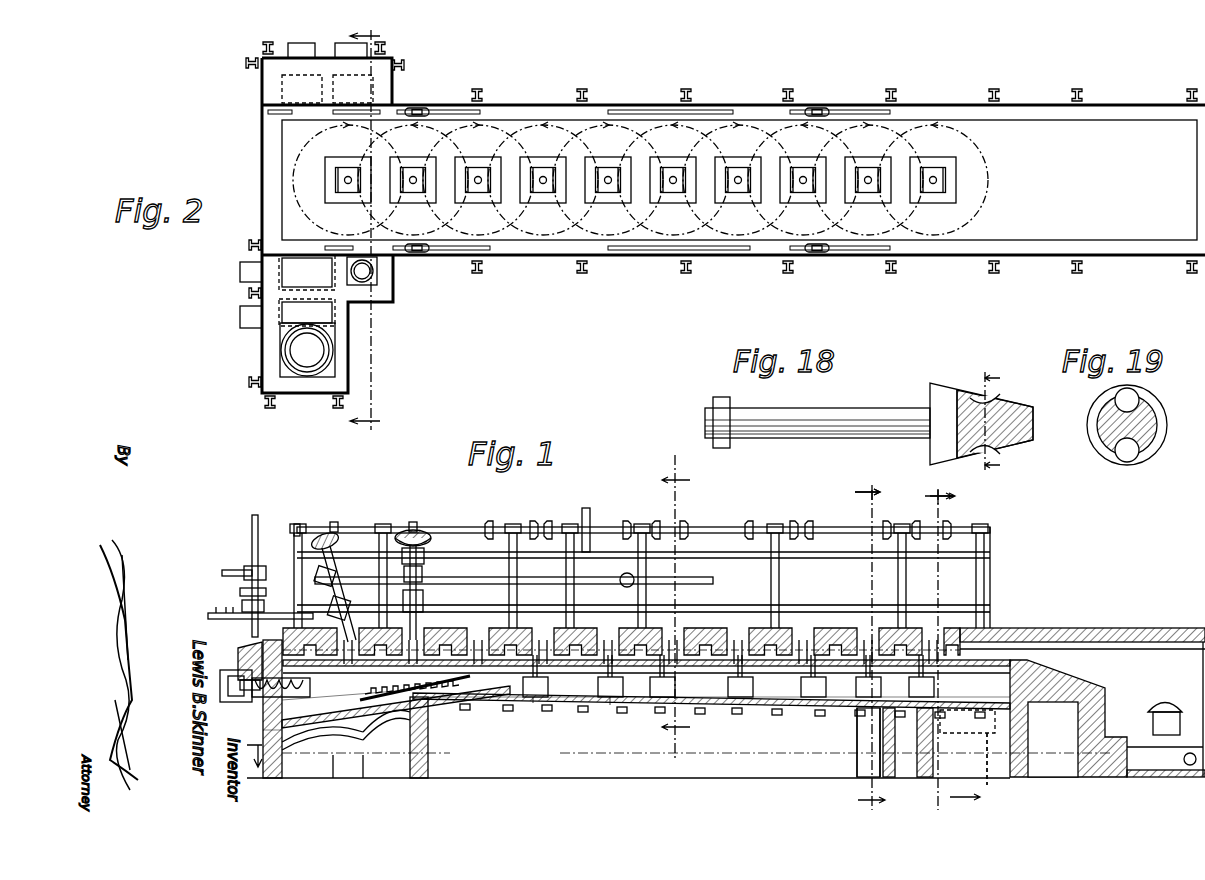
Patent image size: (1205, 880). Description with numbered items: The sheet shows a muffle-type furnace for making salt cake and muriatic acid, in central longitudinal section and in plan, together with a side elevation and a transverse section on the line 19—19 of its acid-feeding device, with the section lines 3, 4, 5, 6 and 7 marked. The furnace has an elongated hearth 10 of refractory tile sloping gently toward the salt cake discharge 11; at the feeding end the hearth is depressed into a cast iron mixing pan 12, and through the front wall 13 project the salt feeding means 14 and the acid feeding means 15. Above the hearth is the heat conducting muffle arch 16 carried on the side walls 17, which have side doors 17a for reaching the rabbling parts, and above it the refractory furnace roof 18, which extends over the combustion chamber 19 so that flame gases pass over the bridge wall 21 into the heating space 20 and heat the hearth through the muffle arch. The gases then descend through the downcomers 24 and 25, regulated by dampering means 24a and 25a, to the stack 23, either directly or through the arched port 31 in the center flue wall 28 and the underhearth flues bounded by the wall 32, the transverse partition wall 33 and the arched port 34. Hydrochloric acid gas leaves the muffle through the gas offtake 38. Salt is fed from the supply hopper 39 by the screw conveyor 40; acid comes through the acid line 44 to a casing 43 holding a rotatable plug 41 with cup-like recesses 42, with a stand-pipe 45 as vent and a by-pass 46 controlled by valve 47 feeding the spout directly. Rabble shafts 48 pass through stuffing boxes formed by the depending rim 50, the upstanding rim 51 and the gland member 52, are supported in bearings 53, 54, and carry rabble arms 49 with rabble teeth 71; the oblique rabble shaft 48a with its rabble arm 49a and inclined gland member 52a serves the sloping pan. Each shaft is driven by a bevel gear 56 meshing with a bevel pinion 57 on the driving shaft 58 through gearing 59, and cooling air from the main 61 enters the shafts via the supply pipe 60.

In FIG. 1, the section line 3 is at (252, 752).
In FIG. 2, the section line 4 is at (371, 240).
In FIG. 18, the section line 5 is at (867, 483).
In FIG. 1, the section line 5 is at (870, 647).
In FIG. 18, the section line 6 is at (942, 489).
In FIG. 1, the section line 6 is at (952, 649).
In FIG. 1, the section line 7 is at (676, 601).
In FIG. 1, the hearth 10 is at (474, 705).
In FIG. 1, the salt cake discharge 11 is at (990, 788).
In FIG. 1, the mixing pan 12 is at (298, 715).
In FIG. 1, the front wall 13 is at (282, 732).
In FIG. 1, the salt feeding means 14 is at (308, 692).
In FIG. 1, the acid feeding means 15 is at (310, 695).
In FIG. 1, the muffle arch 16 is at (822, 668).
In FIG. 2, the side walls 17 is at (753, 103).
In FIG. 1, the side doors 17a is at (535, 700).
In FIG. 2, the furnace roof 18 is at (1055, 180).
In FIG. 1, the furnace roof 18 is at (1118, 628).
In FIG. 18, the combustion chamber 19 is at (987, 422).
In FIG. 1, the heating space 20 is at (660, 638).
In FIG. 1, the bridge wall 21 is at (1070, 686).
In FIG. 2, the stack 23 is at (300, 350).
In FIG. 2, the downcomer 24 is at (310, 283).
In FIG. 2, the dampering means 24a is at (262, 270).
In FIG. 2, the downcomer 25 is at (345, 88).
In FIG. 2, the dampering means 25a is at (338, 58).
In FIG. 1, the center flue wall 28 is at (363, 778).
In FIG. 1, the arched port 31 is at (386, 743).
In FIG. 1, the wall 32 is at (886, 780).
In FIG. 1, the transverse partition wall 33 is at (925, 777).
In FIG. 1, the arched port 34 is at (866, 777).
In FIG. 2, the gas offtake 38 is at (368, 278).
In FIG. 1, the gas offtake 38 is at (322, 751).
In FIG. 1, the supply hopper 39 is at (230, 657).
In FIG. 1, the screw conveyor 40 is at (242, 678).
In FIG. 18, the rotatable plug 41 is at (935, 388).
In FIG. 18, the cup-like recesses 42 is at (978, 396).
In FIG. 19, the cup-like recesses 42 is at (1136, 402).
In FIG. 1, the casing 43 is at (260, 612).
In FIG. 1, the acid line 44 is at (234, 570).
In FIG. 1, the stand-pipe 45 is at (258, 535).
In FIG. 1, the by-pass 46 is at (248, 632).
In FIG. 1, the valve 47 is at (240, 592).
In FIG. 2, the rabble shafts 48 is at (413, 180).
In FIG. 1, the rabble shafts 48 is at (420, 640).
In FIG. 2, the rabble shaft 48a is at (348, 178).
In FIG. 1, the rabble arm 49 is at (466, 684).
In FIG. 1, the rabble arm 49a is at (395, 698).
In FIG. 2, the depending rim 50 is at (958, 178).
In FIG. 1, the depending rim 50 is at (470, 648).
In FIG. 1, the upstanding rim 51 is at (806, 660).
In FIG. 1, the gland member 52 is at (408, 625).
In FIG. 1, the inclined gland member 52a is at (350, 632).
In FIG. 1, the bearing 53 is at (421, 605).
In FIG. 1, the bearing 54 is at (424, 552).
In FIG. 1, the bevel gear 56 is at (418, 535).
In FIG. 1, the bevel pinion 57 is at (333, 532).
In FIG. 1, the driving shaft 58 is at (466, 527).
In FIG. 1, the gearing 59 is at (590, 512).
In FIG. 1, the supply pipe 60 is at (440, 577).
In FIG. 1, the main 61 is at (625, 585).
In FIG. 1, the rabble teeth 71 is at (456, 705).